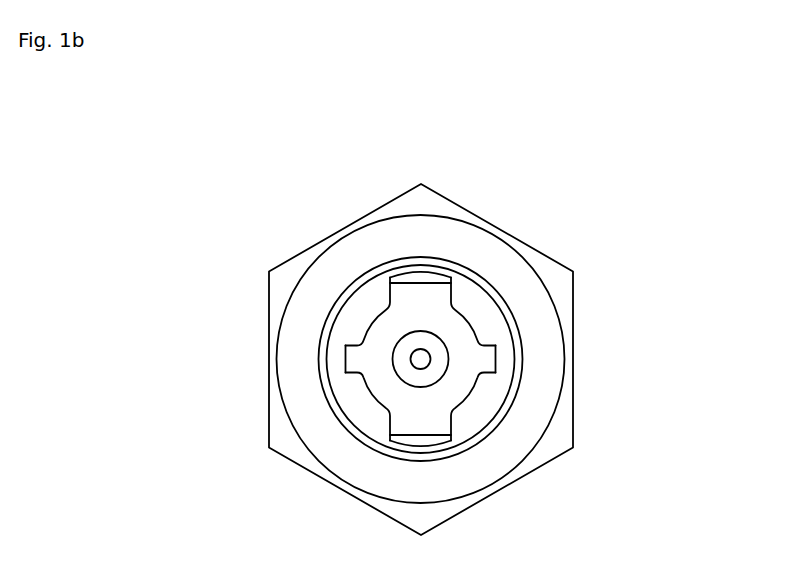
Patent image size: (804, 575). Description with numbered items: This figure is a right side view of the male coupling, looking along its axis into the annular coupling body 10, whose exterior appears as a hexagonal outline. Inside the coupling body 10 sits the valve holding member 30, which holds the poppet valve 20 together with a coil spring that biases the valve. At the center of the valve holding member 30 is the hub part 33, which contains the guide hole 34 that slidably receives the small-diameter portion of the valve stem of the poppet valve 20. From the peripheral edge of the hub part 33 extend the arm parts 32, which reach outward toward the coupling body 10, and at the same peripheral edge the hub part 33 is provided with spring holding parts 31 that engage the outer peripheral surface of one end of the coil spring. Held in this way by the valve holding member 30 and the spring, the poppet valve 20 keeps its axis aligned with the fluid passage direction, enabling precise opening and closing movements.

The coupling body 10 is at (443, 195).
The poppet valve 20 is at (362, 393).
The valve holding member 30 is at (522, 341).
The spring holding parts 31 is at (490, 359).
The arm parts 32 is at (423, 424).
The hub part 33 is at (458, 385).
The guide hole 34 is at (402, 337).